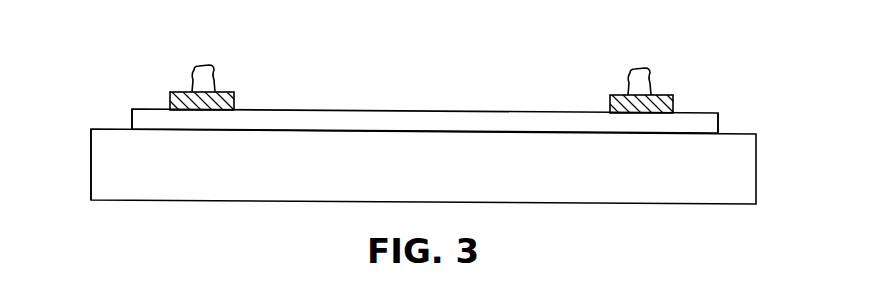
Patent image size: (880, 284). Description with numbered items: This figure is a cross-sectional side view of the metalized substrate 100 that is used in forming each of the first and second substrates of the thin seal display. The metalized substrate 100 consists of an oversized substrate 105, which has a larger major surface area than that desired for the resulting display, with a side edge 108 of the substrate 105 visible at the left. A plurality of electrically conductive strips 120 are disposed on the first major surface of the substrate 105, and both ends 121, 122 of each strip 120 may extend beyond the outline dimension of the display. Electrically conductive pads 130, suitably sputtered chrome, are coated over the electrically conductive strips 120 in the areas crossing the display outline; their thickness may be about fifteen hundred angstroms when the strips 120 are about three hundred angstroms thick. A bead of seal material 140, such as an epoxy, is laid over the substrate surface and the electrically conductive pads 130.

The metalized substrate 100 is at (306, 43).
The oversized substrate 105 is at (757, 170).
The substrate side edge 108 is at (91, 168).
The electrically conductive strips 120 is at (525, 111).
The end of electrically conductive strip 121 is at (720, 122).
The end of electrically conductive strip 122 is at (132, 118).
The electrically conductive pads 130 is at (171, 92).
The seal material bead 140 is at (200, 65).